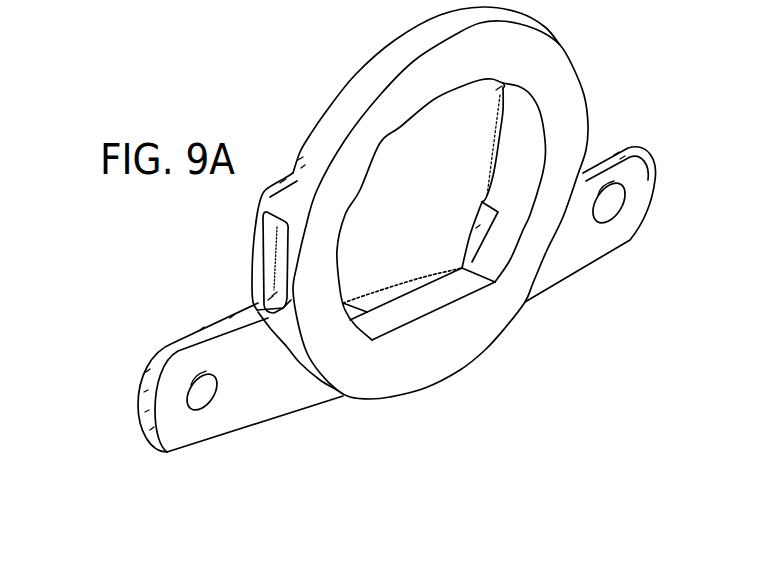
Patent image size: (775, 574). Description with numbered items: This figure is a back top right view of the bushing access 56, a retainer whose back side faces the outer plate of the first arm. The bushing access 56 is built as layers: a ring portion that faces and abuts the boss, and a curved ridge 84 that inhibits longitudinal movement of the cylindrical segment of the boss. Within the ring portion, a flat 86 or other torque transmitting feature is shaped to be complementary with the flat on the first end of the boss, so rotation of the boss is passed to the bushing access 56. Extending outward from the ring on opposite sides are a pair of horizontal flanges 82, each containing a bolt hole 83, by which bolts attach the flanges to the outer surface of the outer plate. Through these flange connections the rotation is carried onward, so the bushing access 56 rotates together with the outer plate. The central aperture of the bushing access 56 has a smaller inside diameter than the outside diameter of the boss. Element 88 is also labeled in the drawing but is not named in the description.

The bushing access 56 is at (633, 93).
The horizontal flanges 82 is at (180, 435).
The bolt holes 83 is at (209, 386).
The curved ridge 84 is at (483, 222).
The flat 86 is at (433, 299).
The boss 88 is at (325, 113).